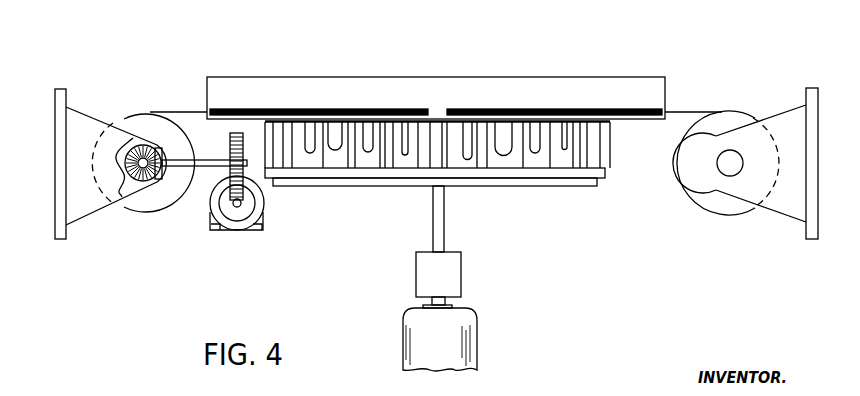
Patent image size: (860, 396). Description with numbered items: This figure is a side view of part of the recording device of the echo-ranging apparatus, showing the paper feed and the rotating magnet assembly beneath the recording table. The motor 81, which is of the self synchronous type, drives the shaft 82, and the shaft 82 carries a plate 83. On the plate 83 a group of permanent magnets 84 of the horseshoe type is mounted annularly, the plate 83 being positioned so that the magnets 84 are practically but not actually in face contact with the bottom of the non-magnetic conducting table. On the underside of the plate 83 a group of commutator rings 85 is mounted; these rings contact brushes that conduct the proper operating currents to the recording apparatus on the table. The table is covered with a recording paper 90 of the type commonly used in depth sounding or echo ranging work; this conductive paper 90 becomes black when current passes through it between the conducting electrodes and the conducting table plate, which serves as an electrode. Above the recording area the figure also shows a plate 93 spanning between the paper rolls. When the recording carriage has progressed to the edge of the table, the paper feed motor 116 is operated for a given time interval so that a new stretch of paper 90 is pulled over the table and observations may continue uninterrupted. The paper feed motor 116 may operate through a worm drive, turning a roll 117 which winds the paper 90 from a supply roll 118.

The motor 81 is at (467, 335).
The shaft 82 is at (444, 225).
The plate 83 is at (593, 170).
The permanent magnets 84 is at (472, 152).
The commutator rings 85 is at (545, 186).
The recording paper 90 is at (177, 111).
The plate 93 is at (658, 92).
The paper feed motor 116 is at (262, 213).
The roll 117 is at (157, 213).
The supply roll 118 is at (710, 198).